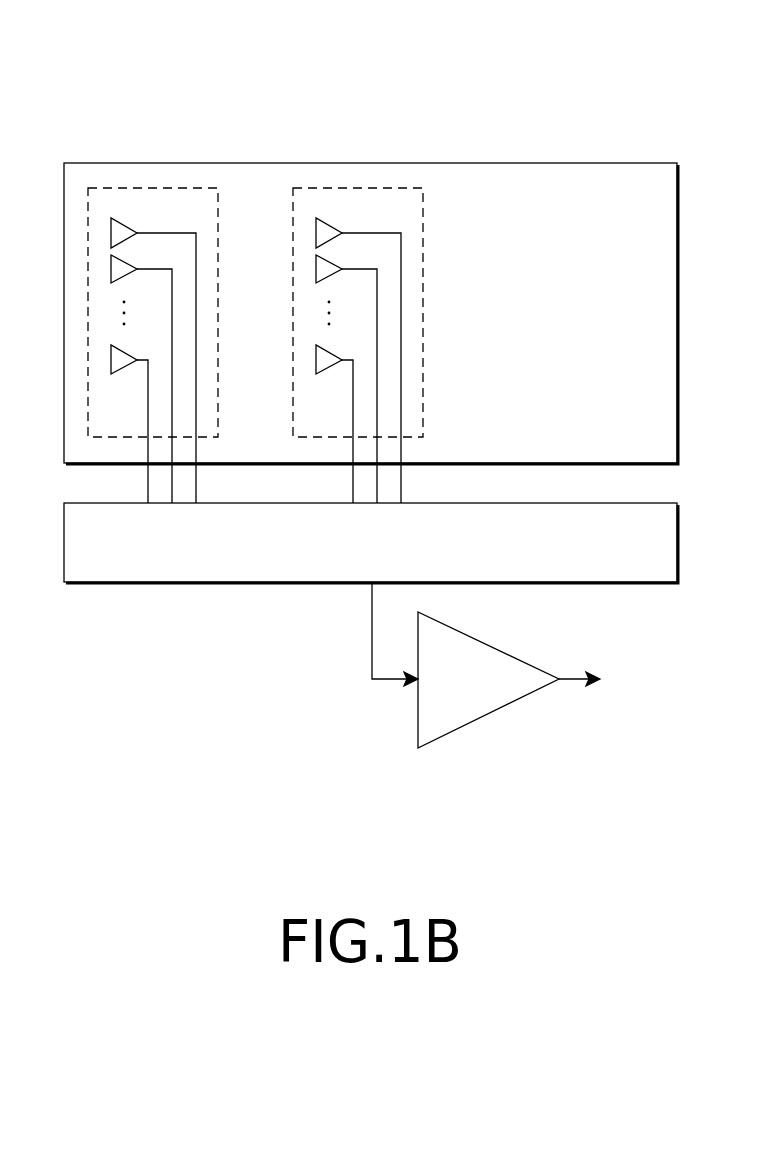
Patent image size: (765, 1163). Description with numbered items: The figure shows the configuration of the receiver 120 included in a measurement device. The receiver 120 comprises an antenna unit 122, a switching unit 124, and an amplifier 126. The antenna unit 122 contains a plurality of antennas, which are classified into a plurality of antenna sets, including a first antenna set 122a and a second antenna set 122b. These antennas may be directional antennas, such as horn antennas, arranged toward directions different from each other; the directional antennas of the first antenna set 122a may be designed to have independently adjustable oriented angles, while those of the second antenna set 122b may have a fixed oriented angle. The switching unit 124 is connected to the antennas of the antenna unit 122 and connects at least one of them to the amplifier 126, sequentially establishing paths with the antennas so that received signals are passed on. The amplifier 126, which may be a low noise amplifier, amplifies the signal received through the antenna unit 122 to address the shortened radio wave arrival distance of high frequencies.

The receiver 120 is at (579, 78).
The antenna unit 122 is at (628, 163).
The first antenna set 122a is at (218, 213).
The second antenna set 122b is at (423, 215).
The switching unit 124 is at (630, 503).
The amplifier 126 is at (490, 645).